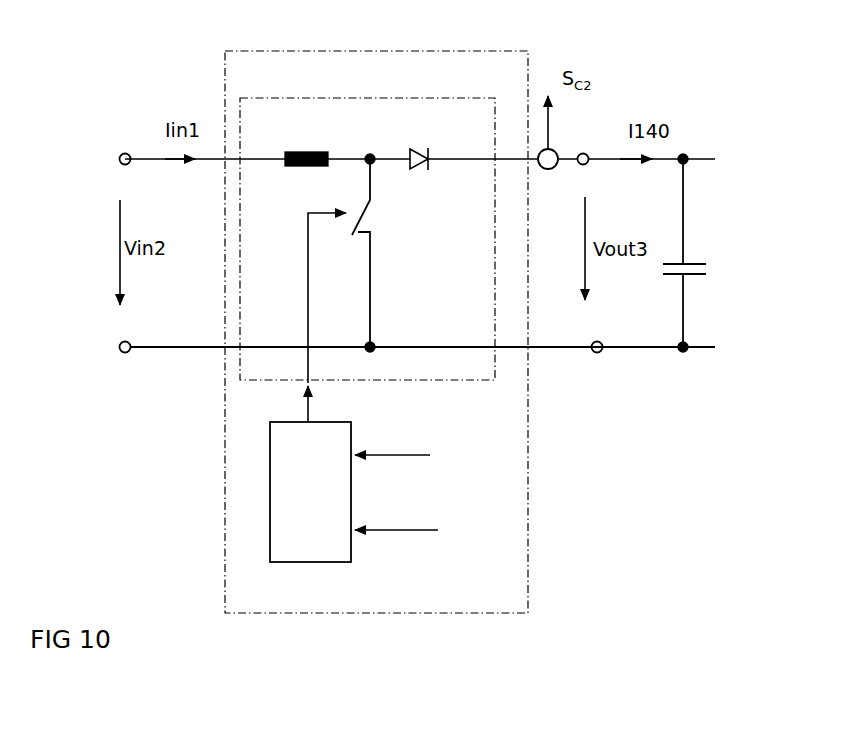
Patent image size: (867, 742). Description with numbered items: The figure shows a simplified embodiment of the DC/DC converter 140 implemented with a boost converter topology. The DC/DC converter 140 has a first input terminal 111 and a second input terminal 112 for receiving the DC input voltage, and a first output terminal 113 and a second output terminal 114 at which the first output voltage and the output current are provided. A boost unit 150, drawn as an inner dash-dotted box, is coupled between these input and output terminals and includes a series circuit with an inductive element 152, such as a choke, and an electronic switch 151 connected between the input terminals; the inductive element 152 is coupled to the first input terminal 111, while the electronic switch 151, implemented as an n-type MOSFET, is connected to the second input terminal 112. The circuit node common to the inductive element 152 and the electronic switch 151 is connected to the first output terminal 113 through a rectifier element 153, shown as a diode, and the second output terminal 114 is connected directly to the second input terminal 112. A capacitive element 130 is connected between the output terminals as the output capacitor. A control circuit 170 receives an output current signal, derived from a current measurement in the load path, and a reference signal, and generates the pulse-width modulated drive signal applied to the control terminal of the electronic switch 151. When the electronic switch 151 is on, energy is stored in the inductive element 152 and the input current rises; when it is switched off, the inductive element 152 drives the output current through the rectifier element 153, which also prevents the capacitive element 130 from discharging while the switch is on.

The first input terminal 111 is at (125, 153).
The second input terminal 112 is at (125, 353).
The first output terminal 113 is at (584, 153).
The second output terminal 114 is at (598, 353).
The capacitive element 130 is at (688, 262).
The DC/DC converter 140 is at (416, 51).
The boost unit 150 is at (308, 98).
The electronic switch 151 is at (380, 219).
The inductive element 152 is at (314, 151).
The rectifier element 153 is at (420, 148).
The control circuit 170 is at (318, 563).